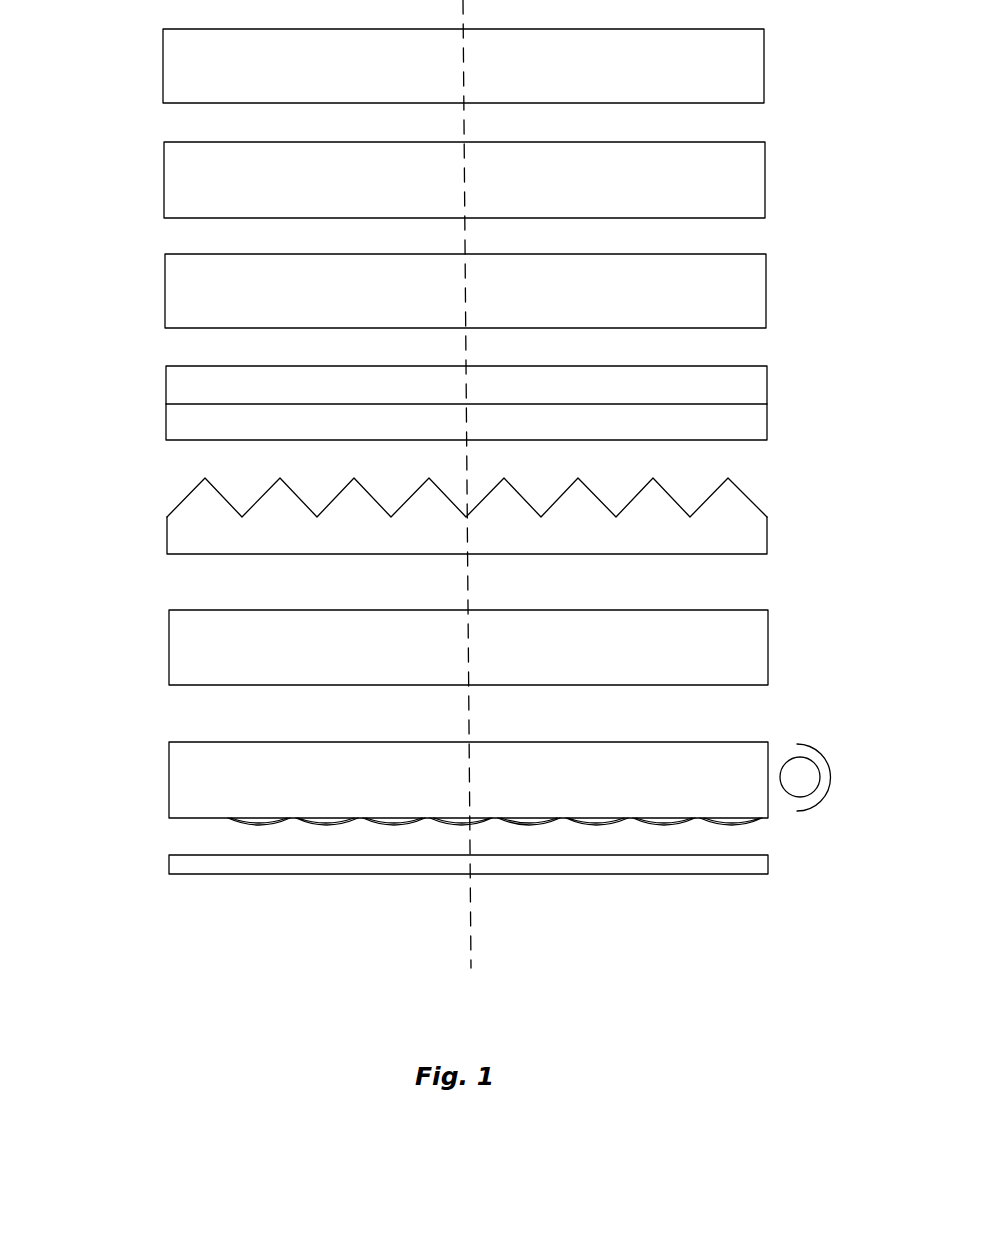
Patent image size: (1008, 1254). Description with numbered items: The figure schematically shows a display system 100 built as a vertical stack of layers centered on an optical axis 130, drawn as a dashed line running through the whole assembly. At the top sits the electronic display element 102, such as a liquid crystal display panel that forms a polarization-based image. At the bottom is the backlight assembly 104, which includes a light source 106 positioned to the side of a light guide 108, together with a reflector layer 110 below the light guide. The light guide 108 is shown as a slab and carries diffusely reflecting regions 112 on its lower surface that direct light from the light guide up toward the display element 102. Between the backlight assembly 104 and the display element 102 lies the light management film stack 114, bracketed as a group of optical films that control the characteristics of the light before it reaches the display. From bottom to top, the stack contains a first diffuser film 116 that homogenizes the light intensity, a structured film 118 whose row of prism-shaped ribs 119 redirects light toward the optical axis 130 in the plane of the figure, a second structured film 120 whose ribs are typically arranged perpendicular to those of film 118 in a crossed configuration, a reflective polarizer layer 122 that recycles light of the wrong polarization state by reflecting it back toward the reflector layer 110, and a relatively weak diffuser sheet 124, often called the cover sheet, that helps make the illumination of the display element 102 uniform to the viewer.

The display system 100 is at (257, 940).
The electronic display element 102 is at (764, 68).
The backlight assembly 104 is at (158, 735).
The light source 106 is at (802, 768).
The light guide 108 is at (202, 742).
The reflector layer 110 is at (768, 856).
The diffusely reflecting regions 112 is at (718, 820).
The light management film stack 114 is at (153, 134).
The first diffuser film 116 is at (768, 641).
The structured film 118 is at (767, 536).
The prism-shaped ribs 119 is at (767, 381).
The structured film 120 is at (767, 423).
The reflective polarizer layer 122 is at (766, 296).
The diffuser sheet 124 is at (765, 180).
The optical axis 130 is at (472, 916).